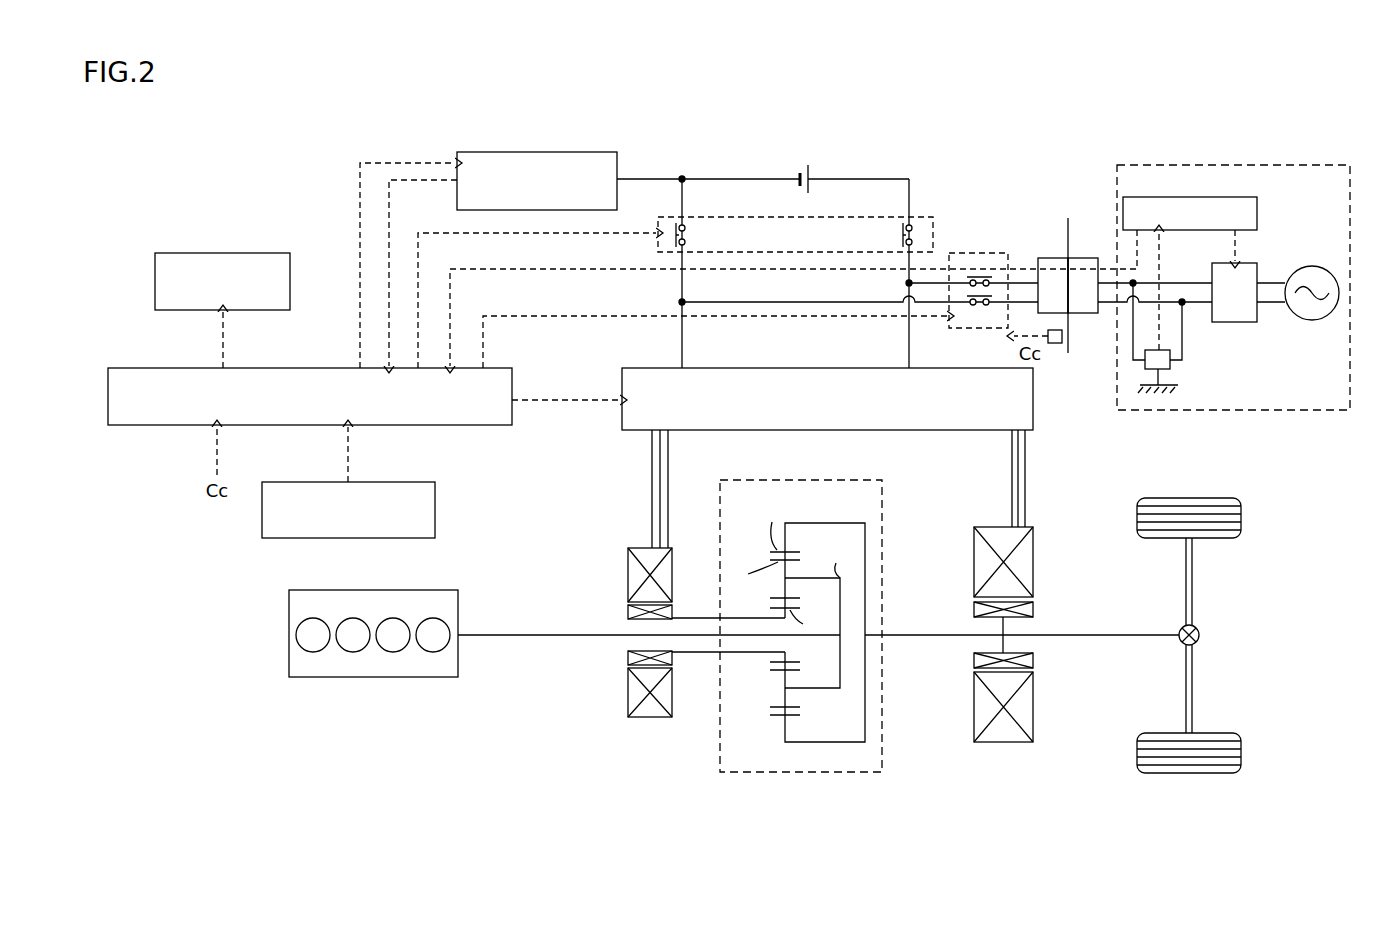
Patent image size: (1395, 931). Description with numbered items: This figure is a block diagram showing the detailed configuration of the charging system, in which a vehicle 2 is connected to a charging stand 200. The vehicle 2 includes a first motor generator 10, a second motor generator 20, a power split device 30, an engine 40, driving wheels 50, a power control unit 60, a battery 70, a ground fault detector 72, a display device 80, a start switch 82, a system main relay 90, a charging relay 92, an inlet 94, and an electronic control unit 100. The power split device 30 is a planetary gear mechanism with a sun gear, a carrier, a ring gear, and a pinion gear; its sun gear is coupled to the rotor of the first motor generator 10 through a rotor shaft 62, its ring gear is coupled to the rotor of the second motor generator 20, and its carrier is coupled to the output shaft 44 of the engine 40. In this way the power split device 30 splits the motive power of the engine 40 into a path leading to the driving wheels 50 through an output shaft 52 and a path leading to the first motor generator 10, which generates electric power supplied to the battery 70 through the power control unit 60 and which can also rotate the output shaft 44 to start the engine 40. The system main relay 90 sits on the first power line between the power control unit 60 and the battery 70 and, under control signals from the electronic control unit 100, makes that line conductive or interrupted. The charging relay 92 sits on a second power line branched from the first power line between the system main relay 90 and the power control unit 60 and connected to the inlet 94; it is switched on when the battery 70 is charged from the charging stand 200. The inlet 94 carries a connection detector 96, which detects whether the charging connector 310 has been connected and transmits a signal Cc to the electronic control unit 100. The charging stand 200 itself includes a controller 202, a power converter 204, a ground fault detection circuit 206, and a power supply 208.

The vehicle 2 is at (182, 200).
The first motor generator 10 is at (637, 548).
The second motor generator 20 is at (990, 527).
The power split device 30 is at (843, 480).
The engine 40 is at (458, 620).
The output shaft 44 is at (577, 635).
The driving wheels 50 is at (1213, 498).
The output shaft 52 is at (1140, 635).
The power control unit 60 is at (1033, 398).
The MG1 rotor shaft 62 is at (695, 618).
The battery 70 is at (808, 170).
The ground fault detector 72 is at (563, 152).
The display device 80 is at (290, 275).
The start switch 82 is at (435, 505).
The system main relay 90 is at (917, 217).
The charging relay 92 is at (978, 253).
The inlet 94 is at (1050, 258).
The connection detector 96 is at (1070, 337).
The electronic control unit 100 is at (493, 368).
The charging stand 200 is at (1138, 165).
The controller 202 is at (1187, 197).
The power converter 204 is at (1235, 322).
The ground fault detection circuit 206 is at (1172, 365).
The power supply 208 is at (1308, 266).
The charging connector 310 is at (1078, 258).